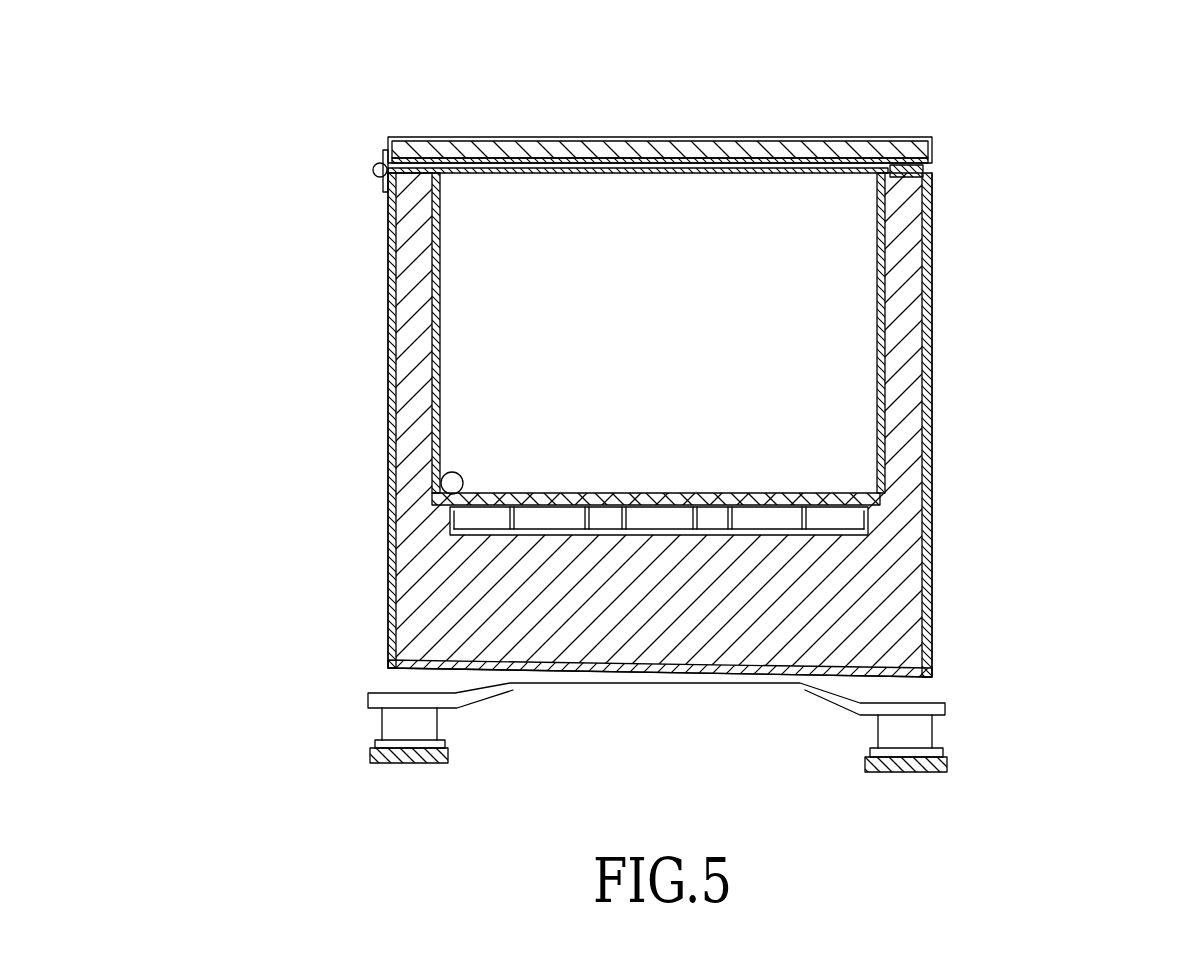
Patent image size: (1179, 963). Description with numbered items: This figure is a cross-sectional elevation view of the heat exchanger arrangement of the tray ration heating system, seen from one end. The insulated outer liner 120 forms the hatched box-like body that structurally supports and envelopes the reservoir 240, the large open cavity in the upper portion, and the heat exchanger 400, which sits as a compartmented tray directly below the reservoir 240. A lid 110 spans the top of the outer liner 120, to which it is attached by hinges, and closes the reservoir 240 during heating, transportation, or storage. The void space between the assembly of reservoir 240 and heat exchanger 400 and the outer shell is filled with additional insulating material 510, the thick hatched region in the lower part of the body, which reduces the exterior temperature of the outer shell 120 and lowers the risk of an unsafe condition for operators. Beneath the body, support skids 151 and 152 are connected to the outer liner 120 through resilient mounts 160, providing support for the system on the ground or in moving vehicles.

The lid 110 is at (630, 137).
The insulated outer liner 120 is at (385, 293).
The reservoir 240 is at (735, 413).
The heat exchanger 400 is at (866, 522).
The additional insulating material 510 is at (436, 565).
The resilient mounts 160 is at (385, 728).
The support skid 151 is at (413, 765).
The support skid 152 is at (902, 772).